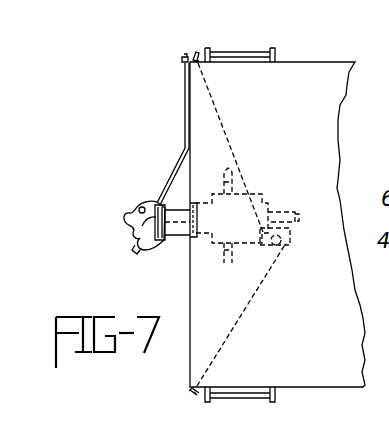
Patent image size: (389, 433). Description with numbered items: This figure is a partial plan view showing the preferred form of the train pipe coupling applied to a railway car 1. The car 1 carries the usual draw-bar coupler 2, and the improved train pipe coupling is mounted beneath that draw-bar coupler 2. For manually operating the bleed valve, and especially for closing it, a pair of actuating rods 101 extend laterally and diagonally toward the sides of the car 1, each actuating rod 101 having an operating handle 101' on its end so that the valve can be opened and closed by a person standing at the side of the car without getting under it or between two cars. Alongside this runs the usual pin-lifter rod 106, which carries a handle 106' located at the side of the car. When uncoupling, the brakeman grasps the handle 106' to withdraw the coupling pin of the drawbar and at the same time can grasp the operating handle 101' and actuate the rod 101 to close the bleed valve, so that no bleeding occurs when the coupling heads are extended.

The car 1 is at (277, 225).
The draw-bar coupler 2 is at (143, 206).
The actuating rod 101 is at (253, 224).
The operating handle 101' is at (218, 40).
The pin-lifter rod 106 is at (162, 134).
The handle 106' is at (162, 41).